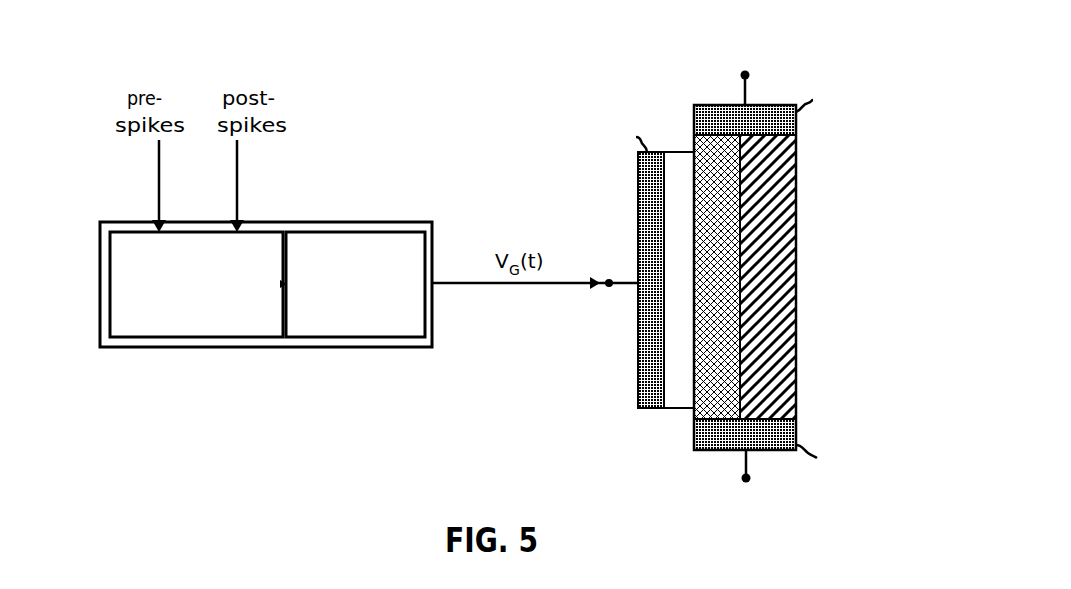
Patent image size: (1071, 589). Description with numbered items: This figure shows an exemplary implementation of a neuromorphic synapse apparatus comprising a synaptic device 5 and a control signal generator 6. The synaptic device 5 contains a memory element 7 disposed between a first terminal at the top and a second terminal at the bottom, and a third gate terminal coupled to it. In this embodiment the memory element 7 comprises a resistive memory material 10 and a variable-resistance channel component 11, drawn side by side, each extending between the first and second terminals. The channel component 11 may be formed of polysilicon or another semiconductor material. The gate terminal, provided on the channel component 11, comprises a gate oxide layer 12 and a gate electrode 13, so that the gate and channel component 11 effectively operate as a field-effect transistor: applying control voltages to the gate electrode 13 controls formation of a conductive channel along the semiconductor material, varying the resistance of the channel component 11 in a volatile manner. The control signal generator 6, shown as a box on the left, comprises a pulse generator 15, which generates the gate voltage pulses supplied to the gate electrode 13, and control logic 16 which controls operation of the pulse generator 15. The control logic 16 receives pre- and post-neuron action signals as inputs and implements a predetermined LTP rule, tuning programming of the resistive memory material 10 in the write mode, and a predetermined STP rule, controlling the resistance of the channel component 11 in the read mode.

The synaptic device 5 is at (903, 64).
The control signal generator 6 is at (432, 232).
The memory element 7 is at (796, 152).
The resistive memory material 10 is at (770, 210).
The variable-resistance channel component 11 is at (720, 258).
The gate oxide layer 12 is at (676, 338).
The gate electrode 13 is at (648, 312).
The pulse generator 15 is at (425, 330).
The control logic 16 is at (110, 330).